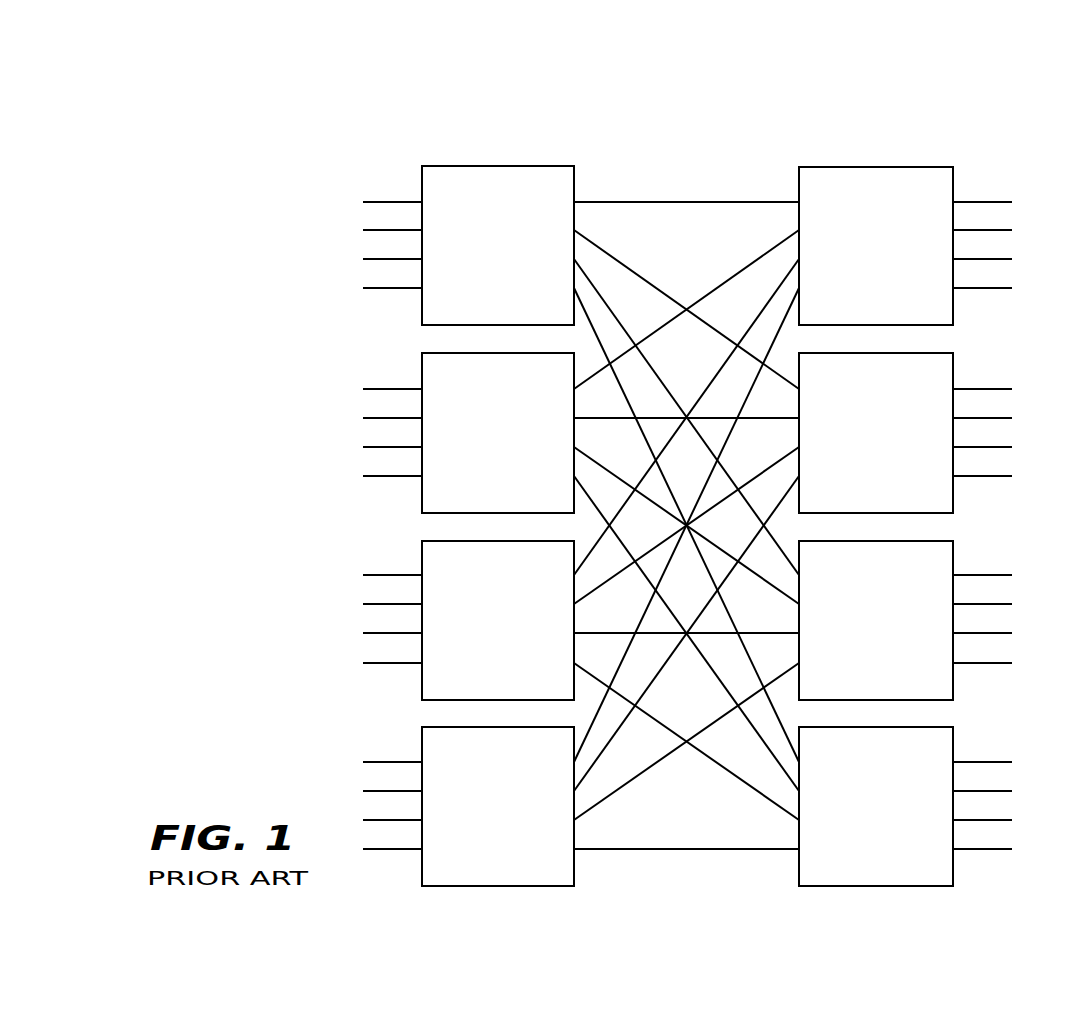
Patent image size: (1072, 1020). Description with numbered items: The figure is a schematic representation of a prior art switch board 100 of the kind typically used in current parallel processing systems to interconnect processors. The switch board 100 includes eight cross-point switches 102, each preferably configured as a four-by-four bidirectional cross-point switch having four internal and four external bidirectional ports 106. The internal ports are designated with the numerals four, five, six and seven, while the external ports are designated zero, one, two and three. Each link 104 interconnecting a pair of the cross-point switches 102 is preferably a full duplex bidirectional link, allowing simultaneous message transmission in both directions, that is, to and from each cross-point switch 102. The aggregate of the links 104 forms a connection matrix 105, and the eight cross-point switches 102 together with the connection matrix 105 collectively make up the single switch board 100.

The switch board 100 is at (592, 79).
The cross-point switch 102 is at (1018, 722).
The link 104 is at (733, 271).
The connection matrix 105 is at (686, 188).
The bidirectional port 106 is at (325, 323).